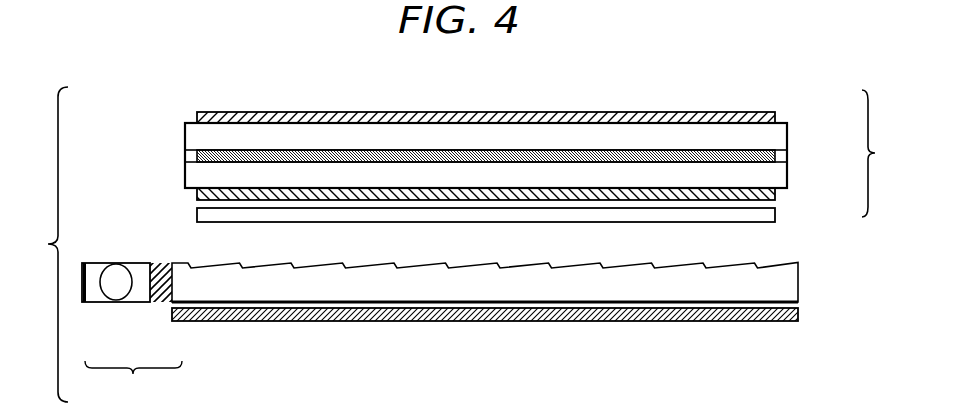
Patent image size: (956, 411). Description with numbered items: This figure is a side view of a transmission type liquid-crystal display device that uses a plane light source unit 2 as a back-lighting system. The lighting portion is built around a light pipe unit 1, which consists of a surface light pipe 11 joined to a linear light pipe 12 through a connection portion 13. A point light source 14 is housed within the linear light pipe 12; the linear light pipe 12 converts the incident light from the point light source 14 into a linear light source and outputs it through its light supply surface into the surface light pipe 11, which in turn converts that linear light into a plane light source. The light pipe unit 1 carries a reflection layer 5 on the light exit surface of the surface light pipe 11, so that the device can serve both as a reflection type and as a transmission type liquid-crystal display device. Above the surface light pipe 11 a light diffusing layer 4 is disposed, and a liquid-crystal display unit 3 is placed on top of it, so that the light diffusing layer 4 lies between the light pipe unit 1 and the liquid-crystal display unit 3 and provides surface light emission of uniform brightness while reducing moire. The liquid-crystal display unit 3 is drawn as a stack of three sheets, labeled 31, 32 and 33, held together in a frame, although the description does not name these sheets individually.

The light pipe unit 1 is at (133, 378).
The plane light source unit 2 is at (93, 212).
The liquid-crystal display unit 3 is at (537, 153).
The light diffusing layer 4 is at (776, 218).
The reflection layer 5 is at (238, 323).
The surface light pipe 11 is at (183, 298).
The linear light pipe 12 is at (101, 305).
The connection portion 13 is at (158, 297).
The point light source 14 is at (116, 273).
The upper optical sheet 31 is at (777, 113).
The middle optical sheet 32 is at (788, 135).
The lower optical sheet 33 is at (777, 195).